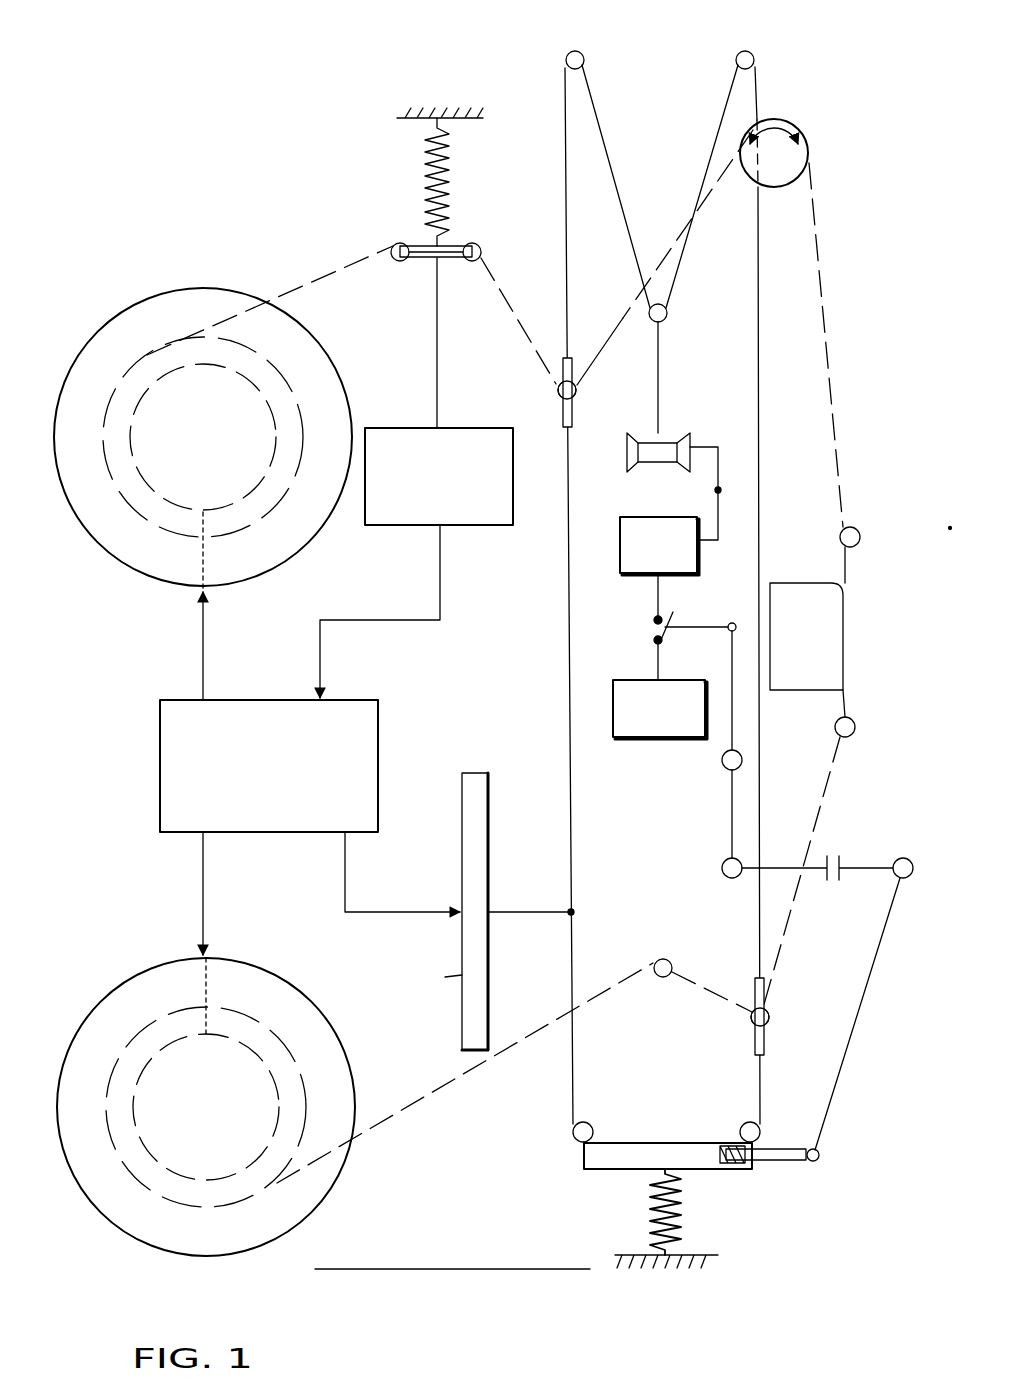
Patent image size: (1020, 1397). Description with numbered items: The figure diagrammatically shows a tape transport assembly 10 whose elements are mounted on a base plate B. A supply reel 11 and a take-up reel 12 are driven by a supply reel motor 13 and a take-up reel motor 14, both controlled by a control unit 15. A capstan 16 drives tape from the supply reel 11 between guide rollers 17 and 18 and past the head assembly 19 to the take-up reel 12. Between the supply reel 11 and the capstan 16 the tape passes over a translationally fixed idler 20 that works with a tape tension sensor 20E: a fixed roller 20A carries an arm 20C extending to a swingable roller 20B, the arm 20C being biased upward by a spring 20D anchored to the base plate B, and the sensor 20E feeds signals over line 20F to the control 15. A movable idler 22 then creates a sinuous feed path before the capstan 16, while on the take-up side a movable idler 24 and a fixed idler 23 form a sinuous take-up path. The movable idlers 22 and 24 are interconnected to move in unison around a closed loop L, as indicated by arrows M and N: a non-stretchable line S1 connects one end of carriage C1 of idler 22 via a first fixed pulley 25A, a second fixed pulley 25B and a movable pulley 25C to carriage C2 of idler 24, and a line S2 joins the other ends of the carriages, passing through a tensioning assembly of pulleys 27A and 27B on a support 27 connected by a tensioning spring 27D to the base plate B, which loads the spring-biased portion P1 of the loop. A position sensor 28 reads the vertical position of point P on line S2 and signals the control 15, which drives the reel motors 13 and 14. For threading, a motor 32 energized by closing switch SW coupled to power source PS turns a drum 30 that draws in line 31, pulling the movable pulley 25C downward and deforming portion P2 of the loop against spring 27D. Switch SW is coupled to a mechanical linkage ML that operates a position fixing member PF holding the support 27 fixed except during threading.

The tape transport assembly 10 is at (468, 1307).
The supply reel 11 is at (142, 300).
The take-up reel 12 is at (122, 996).
The supply reel motor 13 is at (150, 492).
The take-up reel motor 14 is at (175, 1180).
The control unit 15 is at (160, 800).
The capstan 16 is at (800, 138).
The guide roller 17 is at (851, 527).
The guide roller 18 is at (845, 740).
The transducer or head assembly 19 is at (780, 600).
The translationally fixed idler 20 is at (447, 262).
The fixed roller 20A is at (397, 243).
The swingable roller 20B is at (476, 252).
The arm 20C is at (417, 262).
The spring 20D is at (430, 156).
The tape tension sensor 20E is at (480, 528).
The line 20F is at (390, 622).
The movable idler 22 is at (557, 390).
The fixed guide or idler 23 is at (660, 980).
The movable guide or idler 24 is at (770, 1018).
The first fixed pulley 25A is at (578, 52).
The second fixed pulley 25B is at (755, 60).
The movable pulley 25C is at (668, 314).
The support 27 is at (614, 1176).
The pulley 27A is at (574, 1136).
The pulley 27B is at (762, 1128).
The tensioning spring 27D is at (682, 1232).
The position sensor 28 is at (485, 1012).
The drum 30 is at (630, 455).
The line 31 is at (662, 398).
The motor 32 is at (632, 582).
The base plate B is at (452, 108).
The first flexible line or ribbon S1 is at (565, 187).
The line or ribbon S2 is at (570, 1082).
The portion of the closed loop P2 is at (688, 272).
The carriage C1 is at (574, 360).
The carriage C2 is at (755, 986).
The arrow M is at (622, 348).
The switch SW is at (654, 636).
The power source PS is at (660, 740).
The mechanical linkage ML is at (730, 814).
The closed loop L is at (566, 762).
The portion or point on line S2 P is at (576, 913).
The arrow N is at (742, 1090).
The portion of the closed loop P1 is at (677, 1146).
The position fixing member PF is at (787, 1160).